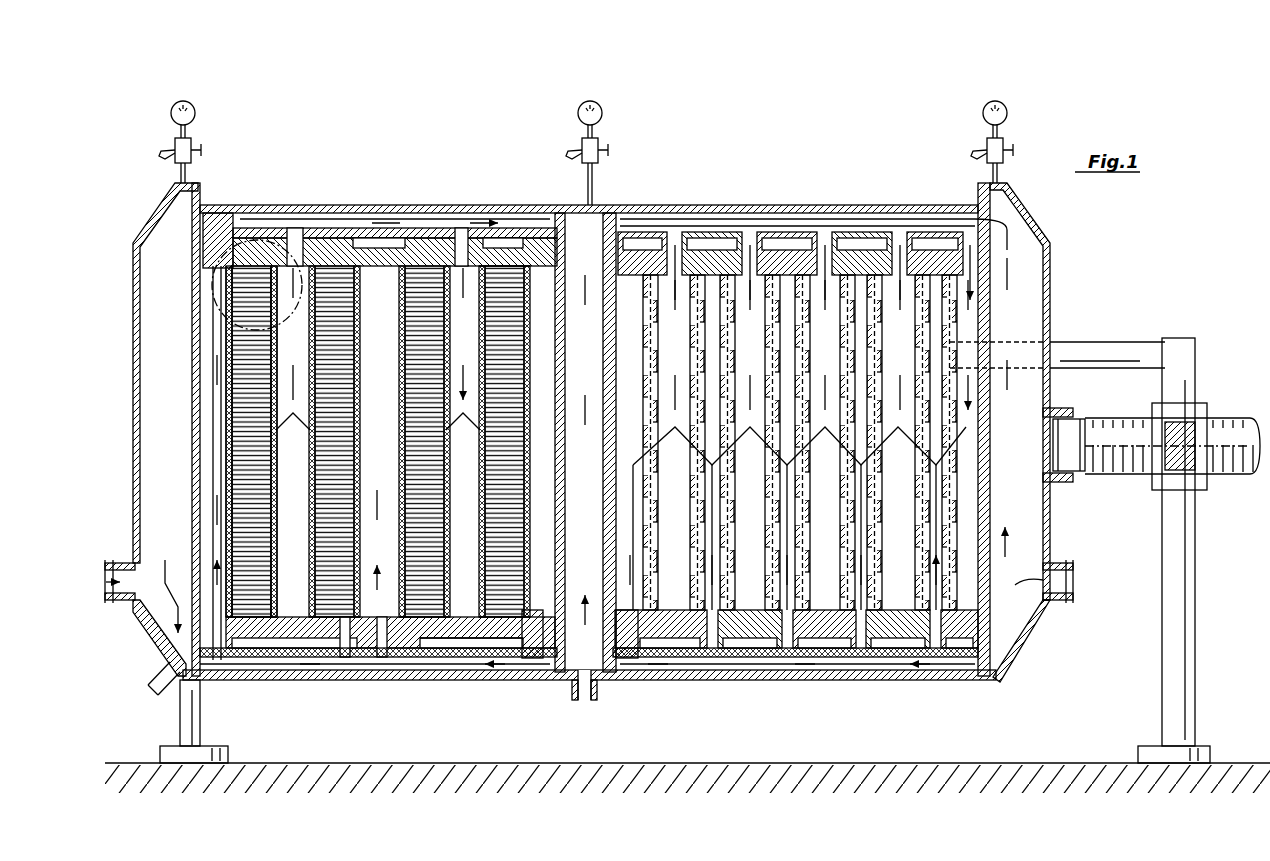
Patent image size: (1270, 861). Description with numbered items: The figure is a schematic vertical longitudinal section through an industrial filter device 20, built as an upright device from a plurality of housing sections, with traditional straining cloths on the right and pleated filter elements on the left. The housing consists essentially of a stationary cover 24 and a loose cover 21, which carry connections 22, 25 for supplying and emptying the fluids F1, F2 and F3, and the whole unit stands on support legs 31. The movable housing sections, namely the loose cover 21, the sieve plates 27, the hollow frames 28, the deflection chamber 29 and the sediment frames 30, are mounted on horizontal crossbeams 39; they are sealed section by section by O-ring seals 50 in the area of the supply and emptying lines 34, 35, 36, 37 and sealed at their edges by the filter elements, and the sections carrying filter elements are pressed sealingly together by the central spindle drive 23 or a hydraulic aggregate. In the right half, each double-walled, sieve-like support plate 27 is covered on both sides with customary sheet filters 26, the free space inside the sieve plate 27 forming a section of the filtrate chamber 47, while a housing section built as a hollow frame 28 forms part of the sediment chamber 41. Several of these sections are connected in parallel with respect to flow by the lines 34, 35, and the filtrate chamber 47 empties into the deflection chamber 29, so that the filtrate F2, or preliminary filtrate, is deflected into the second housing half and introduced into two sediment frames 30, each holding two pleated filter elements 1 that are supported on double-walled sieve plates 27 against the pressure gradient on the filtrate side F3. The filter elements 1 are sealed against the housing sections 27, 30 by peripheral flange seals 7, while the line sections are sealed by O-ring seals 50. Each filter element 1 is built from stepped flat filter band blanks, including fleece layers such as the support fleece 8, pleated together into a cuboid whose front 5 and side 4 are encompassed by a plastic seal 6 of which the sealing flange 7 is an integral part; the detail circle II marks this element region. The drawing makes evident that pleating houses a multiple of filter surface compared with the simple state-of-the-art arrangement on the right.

The pleated filter element 1 is at (303, 503).
The side of the pleating 4 is at (443, 624).
The front of the pleating 5 is at (498, 266).
The plastic seal 6 is at (248, 614).
The peripheral flange seal 7 is at (245, 266).
The filter fleece or support fleece 8 is at (226, 488).
The filter device 20 is at (886, 156).
The loose cover 21 is at (1032, 228).
The connection 22 is at (1057, 593).
The central spindle drive 23 is at (1104, 470).
The stationary cover 24 is at (133, 463).
The connection 25 is at (118, 563).
The sheet filter 26 is at (773, 333).
The double-walled sieve support plate 27 is at (212, 230).
The hollow frame 28 is at (670, 660).
The deflection chamber 29 is at (585, 400).
The sediment frame 30 is at (310, 643).
The support leg 31 is at (1182, 724).
The supply line 34 is at (770, 222).
The emptying line 35 is at (785, 670).
The supply and emptying line 36 is at (453, 240).
The supply and emptying line 37 is at (446, 667).
The horizontal crossbeam 39 is at (1125, 345).
The sediment chamber 41 is at (648, 427).
The filtrate chamber 47 is at (1001, 332).
The O-ring seal 50 is at (349, 232).
The fluid F1 is at (812, 228).
The filtrate F2 is at (405, 222).
The filtrate side fluid F3 is at (388, 692).
The detail circle II is at (212, 290).